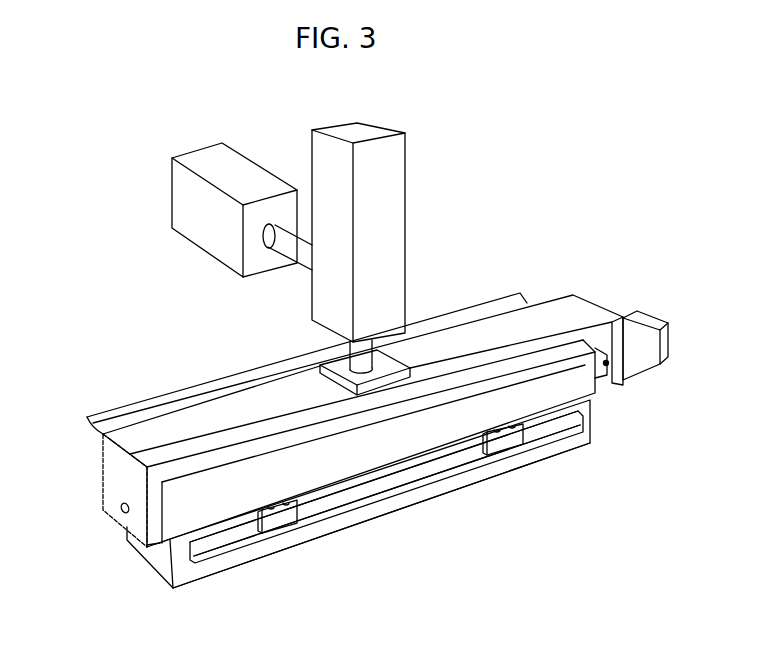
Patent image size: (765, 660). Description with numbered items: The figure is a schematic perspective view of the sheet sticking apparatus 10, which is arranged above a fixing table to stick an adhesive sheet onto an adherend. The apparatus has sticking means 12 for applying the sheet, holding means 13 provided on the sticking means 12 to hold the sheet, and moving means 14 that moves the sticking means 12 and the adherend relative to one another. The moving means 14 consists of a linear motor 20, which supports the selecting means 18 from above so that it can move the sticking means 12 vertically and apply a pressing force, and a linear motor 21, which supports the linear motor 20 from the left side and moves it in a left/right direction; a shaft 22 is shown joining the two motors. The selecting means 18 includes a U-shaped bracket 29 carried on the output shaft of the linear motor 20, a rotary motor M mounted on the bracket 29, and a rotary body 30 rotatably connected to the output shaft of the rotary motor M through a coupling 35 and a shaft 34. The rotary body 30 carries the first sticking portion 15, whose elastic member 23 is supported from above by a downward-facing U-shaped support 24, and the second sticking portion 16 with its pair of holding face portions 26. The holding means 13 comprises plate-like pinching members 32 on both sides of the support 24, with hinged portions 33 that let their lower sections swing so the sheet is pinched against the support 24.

The sheet sticking apparatus 10 is at (104, 110).
The sticking means 12 is at (132, 368).
The holding means 13 is at (470, 488).
The moving means 14 is at (236, 128).
The first sticking portion 15 is at (138, 580).
The second sticking portion 16 is at (228, 370).
The selecting means 18 is at (618, 303).
The linear motor 20 is at (345, 126).
The linear motor 21 is at (244, 167).
The shaft 22 is at (287, 247).
The elastic member 23 is at (166, 586).
The U-shaped support 24 is at (370, 521).
The holding face portions 26 is at (115, 410).
The U-shaped bracket 29 is at (558, 303).
The rotary body 30 is at (527, 370).
The pinching members 32 is at (436, 496).
The hinged portions 33 is at (281, 527).
The shaft 34 is at (121, 513).
The coupling 35 is at (600, 386).
The rotary motor M is at (655, 316).